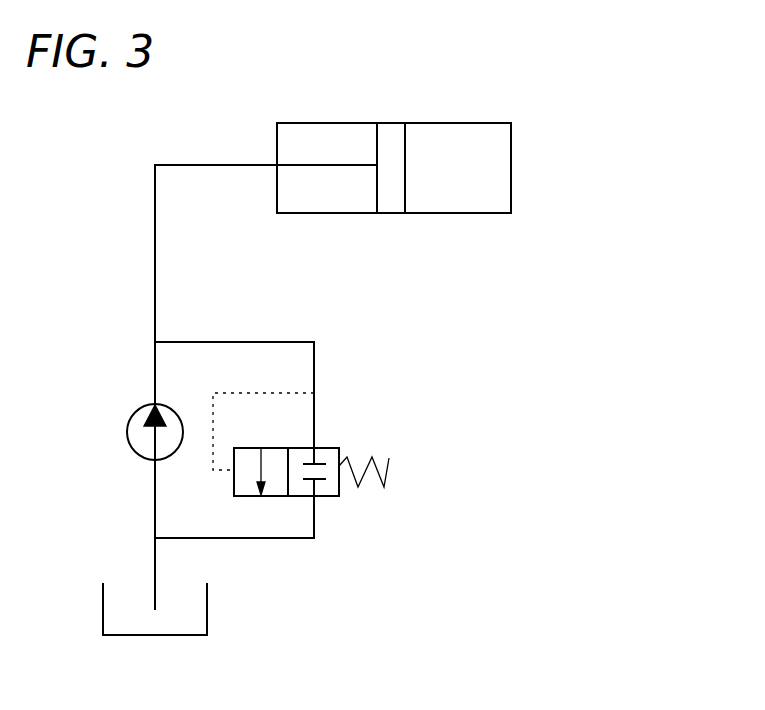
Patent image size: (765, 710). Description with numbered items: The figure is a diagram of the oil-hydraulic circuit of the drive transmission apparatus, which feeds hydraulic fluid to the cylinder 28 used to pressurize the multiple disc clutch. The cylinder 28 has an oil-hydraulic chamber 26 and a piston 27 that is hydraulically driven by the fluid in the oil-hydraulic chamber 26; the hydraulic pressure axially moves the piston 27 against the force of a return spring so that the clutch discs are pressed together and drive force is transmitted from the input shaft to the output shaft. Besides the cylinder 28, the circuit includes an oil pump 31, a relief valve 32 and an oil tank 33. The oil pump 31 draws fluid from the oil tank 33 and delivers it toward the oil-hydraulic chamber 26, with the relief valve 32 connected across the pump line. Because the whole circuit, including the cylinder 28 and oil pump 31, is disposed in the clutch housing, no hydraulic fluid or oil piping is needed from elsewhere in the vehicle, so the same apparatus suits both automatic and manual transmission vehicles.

The oil-hydraulic chamber 26 is at (322, 137).
The piston 27 is at (390, 145).
The cylinder 28 is at (465, 122).
The oil pump 31 is at (147, 408).
The relief valve 32 is at (326, 447).
The oil tank 33 is at (207, 605).